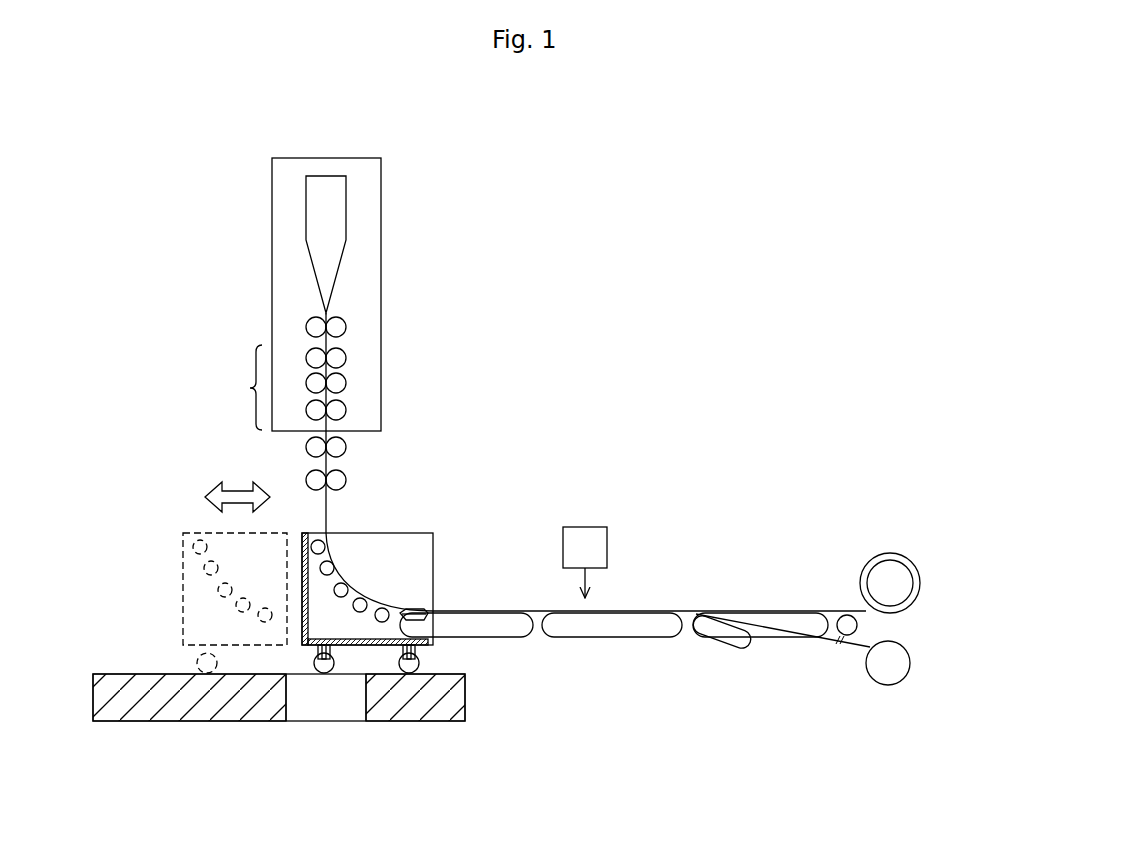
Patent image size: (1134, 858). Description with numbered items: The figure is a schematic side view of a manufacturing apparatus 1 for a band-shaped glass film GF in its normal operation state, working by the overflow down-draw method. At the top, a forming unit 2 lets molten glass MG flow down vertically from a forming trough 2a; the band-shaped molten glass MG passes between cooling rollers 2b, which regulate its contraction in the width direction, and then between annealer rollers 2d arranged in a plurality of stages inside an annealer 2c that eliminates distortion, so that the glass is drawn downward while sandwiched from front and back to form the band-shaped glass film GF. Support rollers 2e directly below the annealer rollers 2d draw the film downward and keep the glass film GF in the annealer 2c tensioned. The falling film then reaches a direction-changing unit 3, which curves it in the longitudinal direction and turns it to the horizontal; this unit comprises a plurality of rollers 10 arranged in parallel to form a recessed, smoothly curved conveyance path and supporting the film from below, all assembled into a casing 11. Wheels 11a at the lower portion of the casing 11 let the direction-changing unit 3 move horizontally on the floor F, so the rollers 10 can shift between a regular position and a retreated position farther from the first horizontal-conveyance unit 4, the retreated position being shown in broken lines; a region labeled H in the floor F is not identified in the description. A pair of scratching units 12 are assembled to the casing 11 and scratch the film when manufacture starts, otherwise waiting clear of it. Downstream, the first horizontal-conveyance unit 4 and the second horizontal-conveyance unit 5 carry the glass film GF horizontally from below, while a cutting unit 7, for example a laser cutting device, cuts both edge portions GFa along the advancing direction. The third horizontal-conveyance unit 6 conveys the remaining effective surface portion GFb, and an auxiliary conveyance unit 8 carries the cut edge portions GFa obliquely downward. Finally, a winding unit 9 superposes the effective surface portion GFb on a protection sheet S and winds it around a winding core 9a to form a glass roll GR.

The manufacturing apparatus 1 is at (732, 180).
The forming unit 2 is at (384, 260).
The forming trough 2a is at (346, 197).
The cooling rollers 2b is at (346, 325).
The annealer 2c is at (239, 387).
The annealer rollers 2d is at (346, 410).
The support rollers 2e is at (346, 446).
The direction-changing unit 3 is at (438, 546).
The first horizontal-conveyance unit 4 is at (513, 637).
The second horizontal-conveyance unit 5 is at (610, 637).
The third horizontal-conveyance unit 6 is at (765, 637).
The cutting unit 7 is at (588, 527).
The auxiliary conveyance unit 8 is at (715, 647).
The winding unit 9 is at (873, 549).
The winding core 9a is at (897, 566).
The rollers 10 is at (318, 578).
The casing 11 is at (433, 580).
The wheels 11a is at (197, 661).
The scratching units 12 is at (413, 621).
The floor F is at (116, 674).
The hole in floor H is at (366, 707).
The protection sheet S is at (883, 640).
The band-shaped glass film GF is at (333, 505).
The edge portions GFa is at (824, 642).
The effective surface portion GFb is at (767, 608).
The glass roll GR is at (921, 590).
The molten glass MG is at (323, 316).